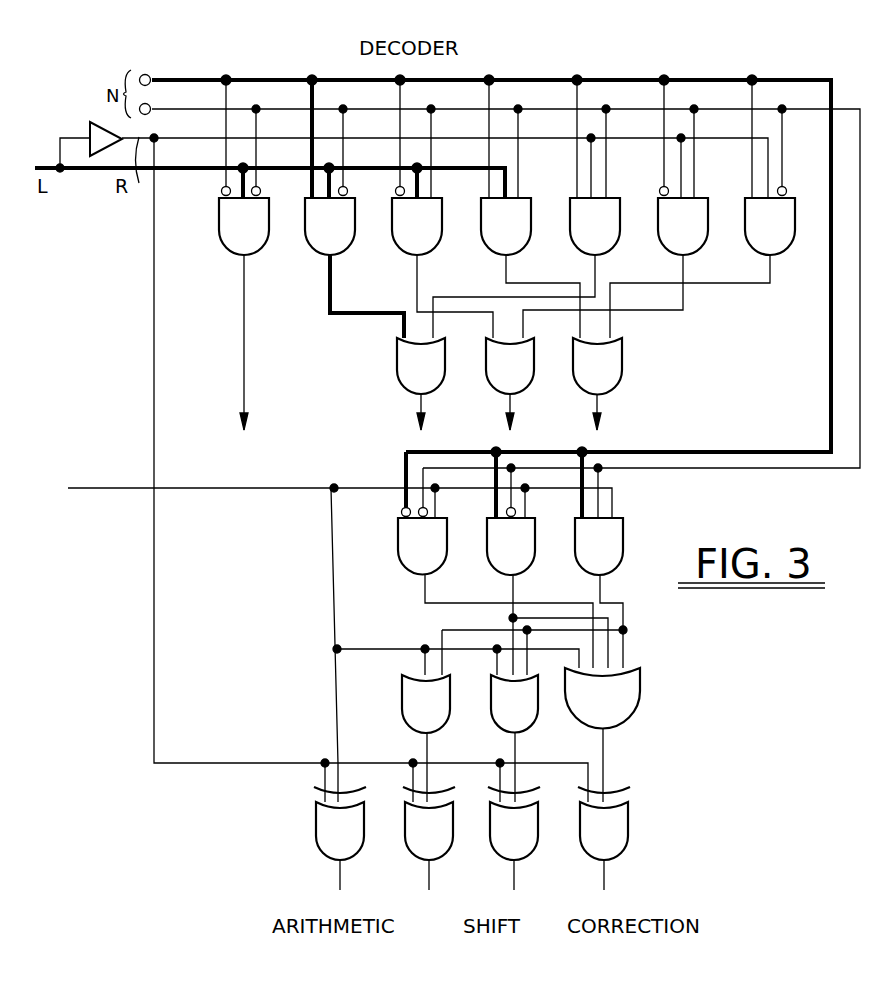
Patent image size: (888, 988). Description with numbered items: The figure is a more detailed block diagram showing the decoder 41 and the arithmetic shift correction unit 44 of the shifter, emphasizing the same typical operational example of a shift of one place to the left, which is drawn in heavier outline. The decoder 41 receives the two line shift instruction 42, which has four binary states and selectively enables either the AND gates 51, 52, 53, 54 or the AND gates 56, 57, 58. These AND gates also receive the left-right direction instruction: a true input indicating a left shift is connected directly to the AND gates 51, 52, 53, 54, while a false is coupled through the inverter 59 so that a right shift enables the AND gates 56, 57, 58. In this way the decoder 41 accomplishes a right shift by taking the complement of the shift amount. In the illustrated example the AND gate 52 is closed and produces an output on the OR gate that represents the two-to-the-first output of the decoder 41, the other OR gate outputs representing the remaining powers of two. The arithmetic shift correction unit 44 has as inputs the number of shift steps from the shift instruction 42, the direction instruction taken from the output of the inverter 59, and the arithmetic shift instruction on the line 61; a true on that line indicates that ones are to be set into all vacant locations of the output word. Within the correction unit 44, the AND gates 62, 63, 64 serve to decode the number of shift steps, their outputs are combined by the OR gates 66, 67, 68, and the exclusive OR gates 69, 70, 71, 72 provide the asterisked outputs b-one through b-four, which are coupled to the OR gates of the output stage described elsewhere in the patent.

The decoder 41 is at (731, 390).
The two line shift instruction 42 is at (167, 78).
The arithmetic shift correction unit 44 is at (555, 722).
The AND gate 51 is at (247, 241).
The AND gate 52 is at (333, 241).
The AND gate 53 is at (420, 241).
The AND gate 54 is at (509, 241).
The AND gate 56 is at (598, 241).
The AND gate 57 is at (686, 241).
The AND gate 58 is at (773, 241).
The inverter 59 is at (108, 124).
The arithmetic shift instruction line 61 is at (80, 492).
The AND gate 62 is at (603, 561).
The AND gate 63 is at (516, 561).
The AND gate 64 is at (427, 561).
The OR gate 66 is at (620, 735).
The OR gate 67 is at (518, 718).
The OR gate 68 is at (430, 718).
The exclusive OR gate 69 is at (610, 838).
The exclusive OR gate 70 is at (517, 846).
The exclusive OR gate 71 is at (432, 846).
The exclusive OR gate 72 is at (343, 846).